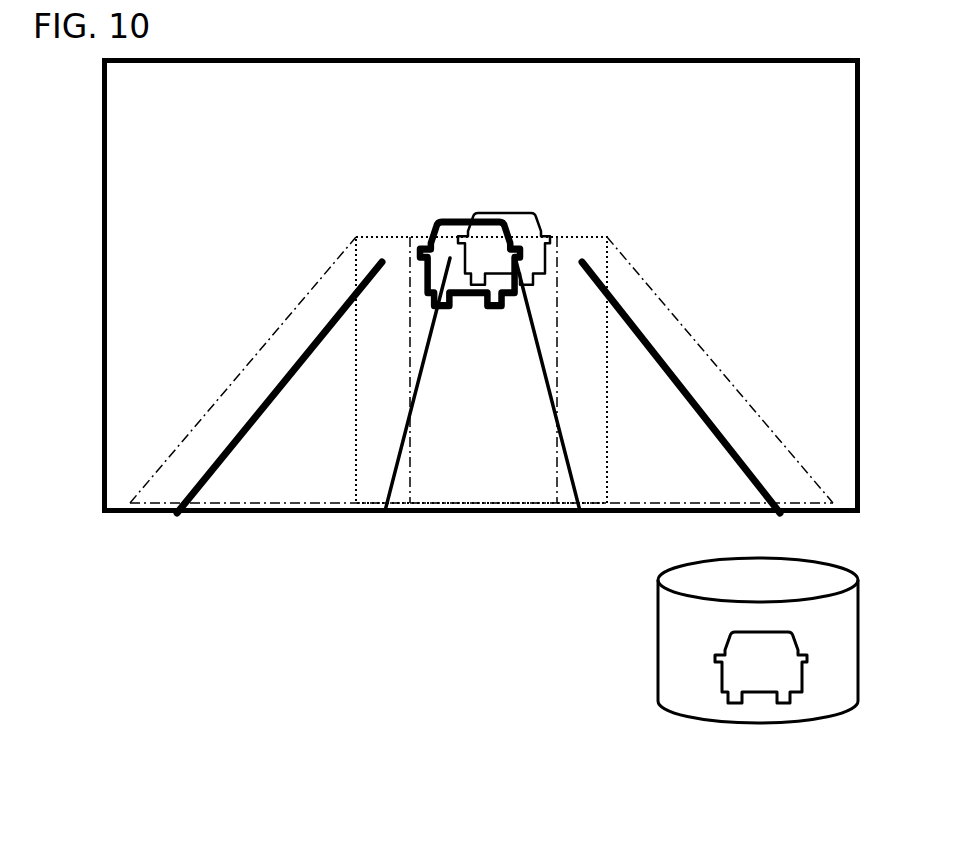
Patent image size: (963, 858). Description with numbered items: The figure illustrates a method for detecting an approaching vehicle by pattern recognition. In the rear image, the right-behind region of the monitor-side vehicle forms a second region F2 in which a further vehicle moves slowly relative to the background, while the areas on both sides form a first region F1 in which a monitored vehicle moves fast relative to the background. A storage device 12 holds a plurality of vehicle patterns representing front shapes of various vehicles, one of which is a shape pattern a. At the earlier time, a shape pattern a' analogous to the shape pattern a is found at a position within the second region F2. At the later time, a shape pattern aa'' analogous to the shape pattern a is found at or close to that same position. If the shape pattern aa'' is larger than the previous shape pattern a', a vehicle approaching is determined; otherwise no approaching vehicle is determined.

The first region F1 is at (481, 370).
The second region F2 is at (481, 537).
The shape pattern a" aa'' is at (456, 236).
The shape pattern a' is at (519, 226).
The shape pattern a is at (748, 699).
The storage device 12 is at (758, 661).